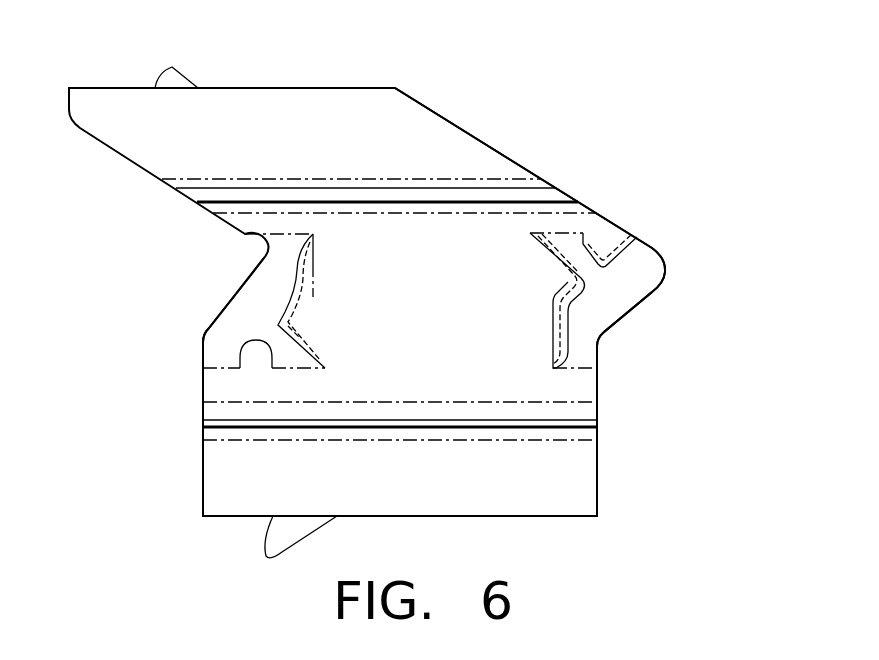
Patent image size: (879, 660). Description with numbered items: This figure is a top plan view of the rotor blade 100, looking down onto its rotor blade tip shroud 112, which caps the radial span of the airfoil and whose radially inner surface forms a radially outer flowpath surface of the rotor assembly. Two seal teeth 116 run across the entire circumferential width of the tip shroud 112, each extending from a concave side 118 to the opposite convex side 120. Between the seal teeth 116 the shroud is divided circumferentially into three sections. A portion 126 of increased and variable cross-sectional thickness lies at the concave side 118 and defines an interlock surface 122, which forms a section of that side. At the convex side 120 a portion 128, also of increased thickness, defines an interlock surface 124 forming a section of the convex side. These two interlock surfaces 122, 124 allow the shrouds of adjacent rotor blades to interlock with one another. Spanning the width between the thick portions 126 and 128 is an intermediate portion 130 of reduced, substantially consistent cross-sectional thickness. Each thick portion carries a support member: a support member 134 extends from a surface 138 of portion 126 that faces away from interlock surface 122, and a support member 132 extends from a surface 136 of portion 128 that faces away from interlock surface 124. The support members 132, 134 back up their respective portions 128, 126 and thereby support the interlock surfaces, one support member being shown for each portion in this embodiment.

The rotor blade 100 is at (680, 72).
The rotor blade tip shroud 112 is at (495, 128).
The seal teeth 116 is at (520, 195).
The concave side 118 is at (217, 278).
The convex side 120 is at (672, 296).
The interlock surface 122 is at (208, 304).
The interlock surface 124 is at (636, 320).
The portion of tip shroud 126 is at (235, 332).
The portion of tip shroud 128 is at (640, 262).
The intermediate portion 130 is at (395, 282).
The support member 132 is at (580, 233).
The support member 134 is at (278, 363).
The surface of portion 128 136 is at (562, 293).
The surface of portion 126 138 is at (286, 325).